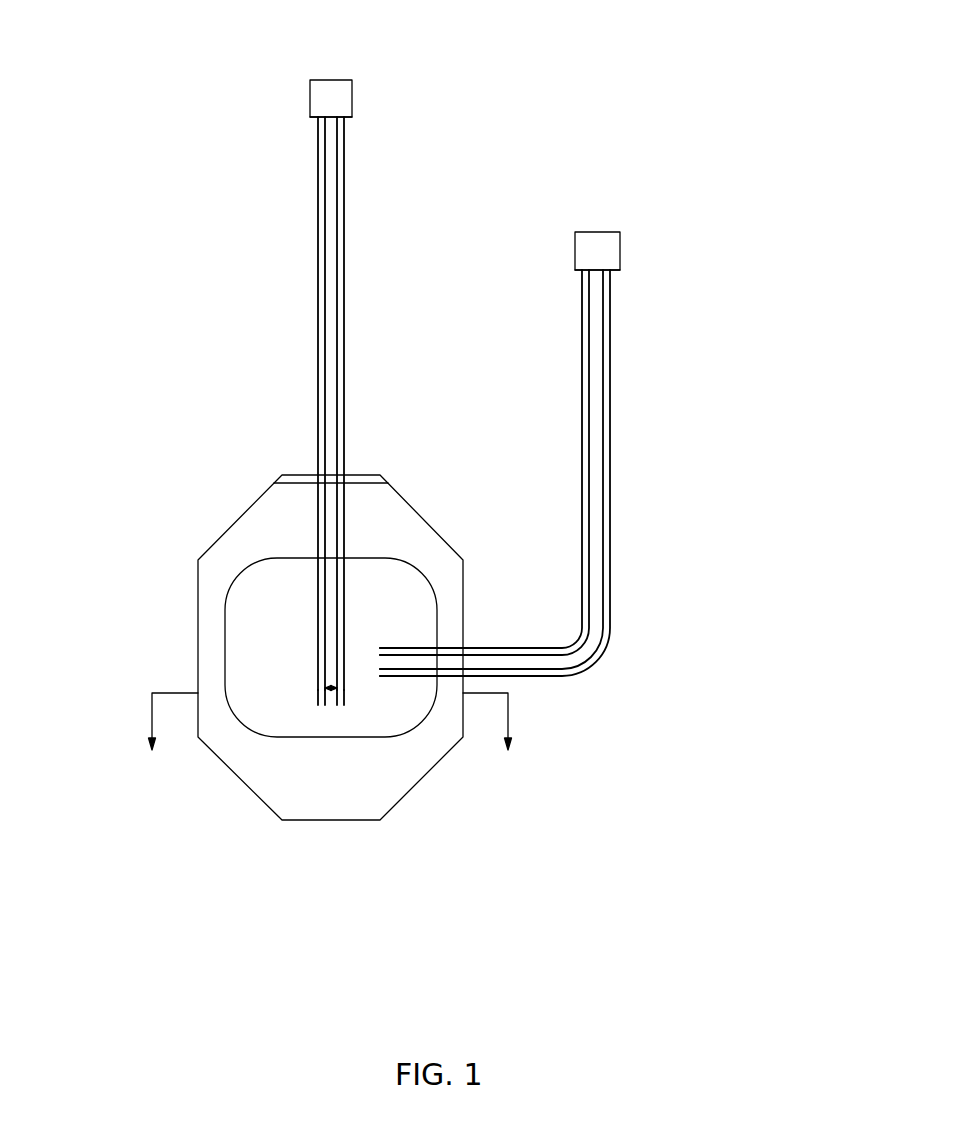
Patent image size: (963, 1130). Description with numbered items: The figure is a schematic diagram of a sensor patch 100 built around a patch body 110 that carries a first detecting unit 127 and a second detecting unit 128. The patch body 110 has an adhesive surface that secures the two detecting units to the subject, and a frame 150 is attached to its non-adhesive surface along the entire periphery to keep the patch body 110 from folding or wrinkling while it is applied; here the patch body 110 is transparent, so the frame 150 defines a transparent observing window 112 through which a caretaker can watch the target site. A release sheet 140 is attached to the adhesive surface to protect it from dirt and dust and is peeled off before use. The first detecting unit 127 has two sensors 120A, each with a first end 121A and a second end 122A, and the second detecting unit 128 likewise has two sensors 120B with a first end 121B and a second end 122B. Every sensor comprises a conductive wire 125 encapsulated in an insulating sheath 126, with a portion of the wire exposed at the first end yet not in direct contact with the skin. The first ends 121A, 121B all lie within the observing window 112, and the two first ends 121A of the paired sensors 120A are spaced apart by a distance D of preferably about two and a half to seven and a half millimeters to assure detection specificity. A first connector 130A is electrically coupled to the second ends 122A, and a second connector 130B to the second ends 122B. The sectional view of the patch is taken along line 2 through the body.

The sensor patch 100 is at (297, 643).
The patch body 110 is at (297, 614).
The transparent observing window 112 is at (265, 598).
The sensors of the first detecting unit 120A is at (316, 262).
The sensors of the second detecting unit 120B is at (593, 608).
The first end of sensor 120A 121A is at (306, 691).
The first end of sensor 120B 121B is at (398, 677).
The second end of sensor 120A 122A is at (308, 120).
The second end of sensor 120B 122B is at (623, 273).
The conductive wire 125 is at (389, 683).
The insulating sheath 126 is at (420, 651).
The first detecting unit 127 is at (180, 411).
The second detecting unit 128 is at (626, 580).
The first connector 130A is at (333, 98).
The second connector 130B is at (600, 260).
The release sheet 140 is at (362, 478).
The frame 150 is at (380, 535).
The distance between the two first ends D is at (324, 670).
The section line 2- 2 is at (330, 741).